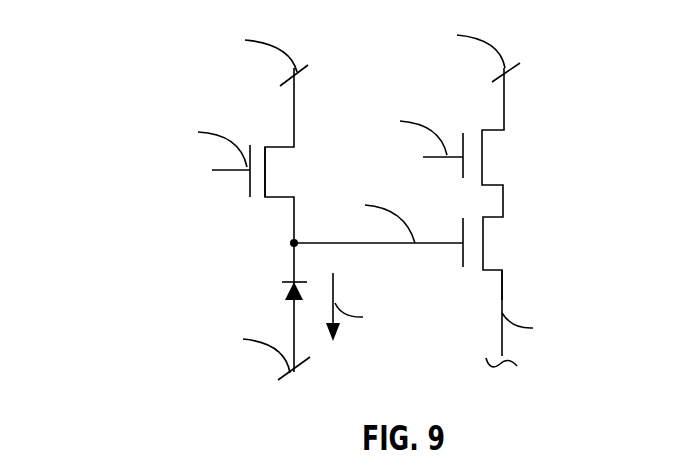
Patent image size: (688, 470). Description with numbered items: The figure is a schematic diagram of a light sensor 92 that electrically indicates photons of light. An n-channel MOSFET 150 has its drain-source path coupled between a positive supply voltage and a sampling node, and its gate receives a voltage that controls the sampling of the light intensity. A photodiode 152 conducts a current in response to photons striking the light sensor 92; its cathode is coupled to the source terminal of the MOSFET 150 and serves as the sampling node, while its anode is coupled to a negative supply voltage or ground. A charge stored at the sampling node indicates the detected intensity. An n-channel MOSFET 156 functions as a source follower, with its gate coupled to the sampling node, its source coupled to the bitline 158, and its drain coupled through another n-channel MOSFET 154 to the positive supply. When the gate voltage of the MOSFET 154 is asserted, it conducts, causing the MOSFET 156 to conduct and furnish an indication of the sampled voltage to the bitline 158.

The light sensor 92 is at (163, 98).
The n-channel MOSFET 150 is at (273, 200).
The photodiode 152 is at (287, 287).
The n-channel MOSFET 154 is at (482, 140).
The n-channel MOSFET 156 is at (483, 233).
The bitline 158 is at (502, 277).